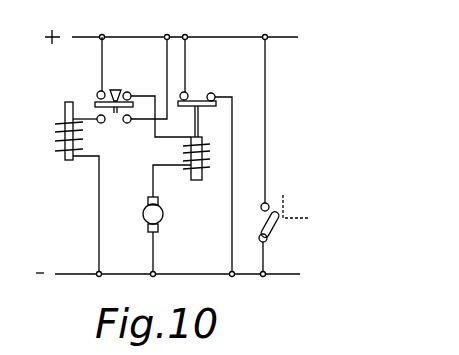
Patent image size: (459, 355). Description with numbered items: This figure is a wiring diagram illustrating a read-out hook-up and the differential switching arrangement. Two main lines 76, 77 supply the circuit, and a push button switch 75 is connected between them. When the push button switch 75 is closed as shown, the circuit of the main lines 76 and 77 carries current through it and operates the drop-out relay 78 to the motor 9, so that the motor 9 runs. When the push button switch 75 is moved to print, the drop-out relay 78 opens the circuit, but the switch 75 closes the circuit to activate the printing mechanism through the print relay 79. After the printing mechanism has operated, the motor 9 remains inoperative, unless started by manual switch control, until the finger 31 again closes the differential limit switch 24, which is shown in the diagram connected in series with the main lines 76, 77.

The main line 76 is at (291, 35).
The main line 77 is at (288, 276).
The push button switch 75 is at (119, 93).
The print relay 79 is at (70, 161).
The drop-out relay 78 is at (194, 181).
The motor 9 is at (160, 221).
The differential limit switch 24 is at (273, 227).
The finger 31 is at (285, 207).